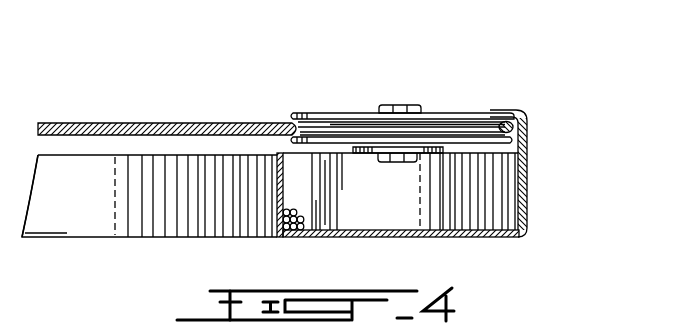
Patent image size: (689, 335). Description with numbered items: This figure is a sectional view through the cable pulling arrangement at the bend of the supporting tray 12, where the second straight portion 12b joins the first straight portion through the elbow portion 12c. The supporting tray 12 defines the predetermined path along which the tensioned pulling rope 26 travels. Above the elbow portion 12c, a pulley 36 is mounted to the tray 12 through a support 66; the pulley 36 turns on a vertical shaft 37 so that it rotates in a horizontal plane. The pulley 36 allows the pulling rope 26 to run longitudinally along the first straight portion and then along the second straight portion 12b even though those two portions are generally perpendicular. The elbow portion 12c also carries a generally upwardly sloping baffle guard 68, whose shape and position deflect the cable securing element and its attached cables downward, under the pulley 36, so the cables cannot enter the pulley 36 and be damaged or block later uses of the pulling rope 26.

The supporting tray 12 is at (527, 200).
The second straight portion 12b is at (52, 238).
The elbow portion 12c is at (445, 197).
The pulling rope 26 is at (213, 126).
The pulley 36 is at (450, 114).
The vertical shaft 37 is at (402, 105).
The support 66 is at (363, 152).
The baffle guard 68 is at (513, 133).